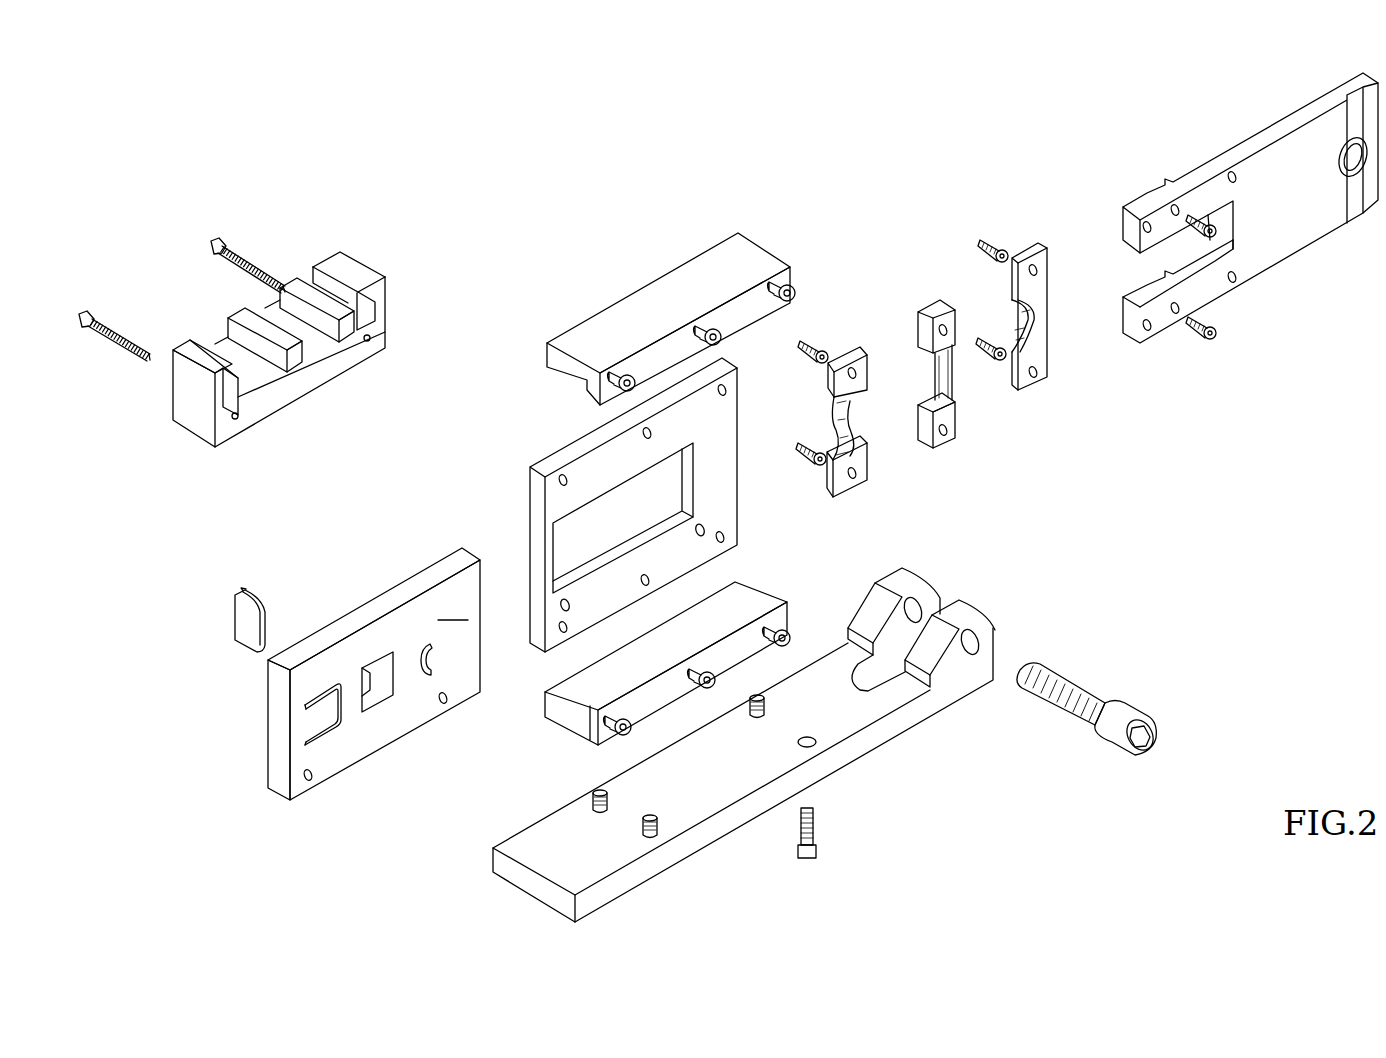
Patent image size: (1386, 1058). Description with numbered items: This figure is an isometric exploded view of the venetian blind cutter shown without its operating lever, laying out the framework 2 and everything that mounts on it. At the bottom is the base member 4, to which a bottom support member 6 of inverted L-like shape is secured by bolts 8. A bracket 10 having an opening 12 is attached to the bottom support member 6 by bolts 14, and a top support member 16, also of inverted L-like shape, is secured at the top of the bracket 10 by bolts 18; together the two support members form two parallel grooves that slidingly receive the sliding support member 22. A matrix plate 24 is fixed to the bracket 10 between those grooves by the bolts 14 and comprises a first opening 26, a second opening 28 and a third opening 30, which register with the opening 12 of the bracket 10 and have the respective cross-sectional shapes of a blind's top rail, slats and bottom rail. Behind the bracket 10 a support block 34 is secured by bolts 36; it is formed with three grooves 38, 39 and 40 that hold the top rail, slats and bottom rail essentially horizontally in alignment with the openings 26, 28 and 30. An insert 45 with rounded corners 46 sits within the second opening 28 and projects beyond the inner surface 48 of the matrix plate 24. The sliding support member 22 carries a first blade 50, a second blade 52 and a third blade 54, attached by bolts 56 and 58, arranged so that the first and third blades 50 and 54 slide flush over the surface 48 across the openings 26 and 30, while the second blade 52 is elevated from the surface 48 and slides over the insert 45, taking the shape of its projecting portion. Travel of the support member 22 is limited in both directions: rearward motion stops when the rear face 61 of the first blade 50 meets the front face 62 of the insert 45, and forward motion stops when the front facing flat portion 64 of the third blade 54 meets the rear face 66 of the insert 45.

The framework 2 is at (425, 850).
The base member 4 is at (744, 758).
The bottom support member 6 is at (652, 663).
The bolts 8 is at (748, 713).
The bracket 10 is at (633, 505).
The opening 12 is at (572, 540).
The bolts 14 is at (707, 678).
The top support member 16 is at (685, 291).
The bolts 18 is at (770, 293).
The support member 22 is at (1250, 201).
The matrix plate 24 is at (331, 675).
The first opening 26 is at (333, 732).
The second opening 28 is at (373, 690).
The third opening 30 is at (432, 665).
The support block 34 is at (318, 330).
The bolts 36 is at (213, 248).
The groove 38 is at (252, 362).
The groove 39 is at (337, 337).
The groove 40 is at (388, 312).
The insert 45 is at (182, 619).
The rounded corners 46 is at (262, 632).
The inner surface 48 is at (453, 607).
The first blade 50 is at (879, 426).
The second blade 52 is at (957, 430).
The third blade 54 is at (1059, 330).
The bolts 56 is at (820, 345).
The bolts 58 is at (1215, 228).
The rear face 61 is at (853, 428).
The front face 62 is at (242, 624).
The front facing flat portion 64 is at (1030, 310).
The rear face 66 is at (253, 597).